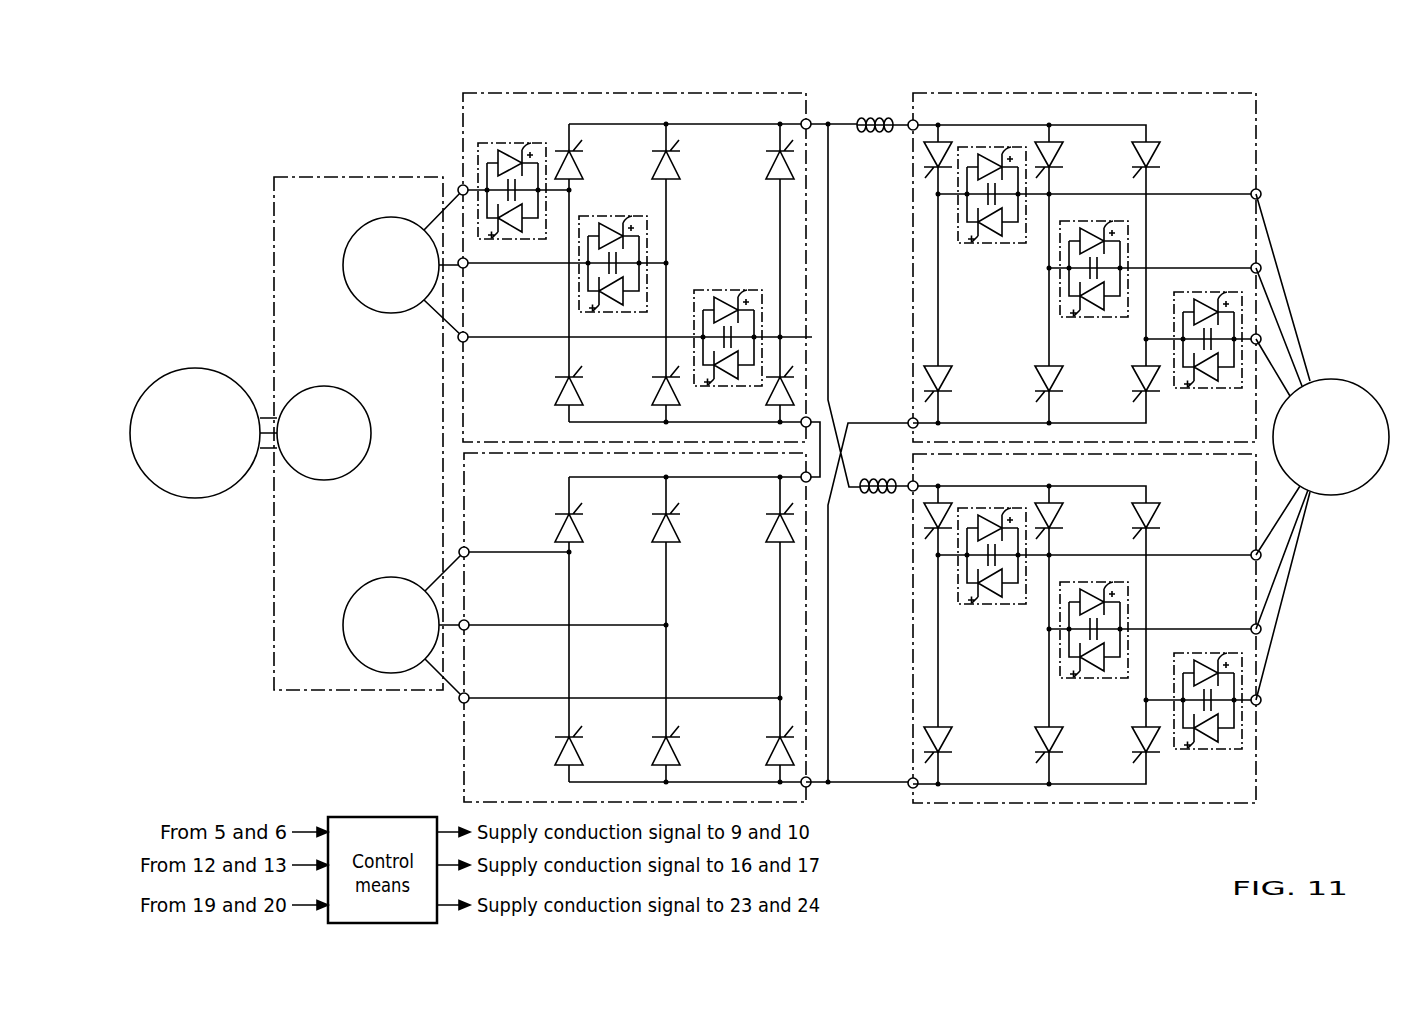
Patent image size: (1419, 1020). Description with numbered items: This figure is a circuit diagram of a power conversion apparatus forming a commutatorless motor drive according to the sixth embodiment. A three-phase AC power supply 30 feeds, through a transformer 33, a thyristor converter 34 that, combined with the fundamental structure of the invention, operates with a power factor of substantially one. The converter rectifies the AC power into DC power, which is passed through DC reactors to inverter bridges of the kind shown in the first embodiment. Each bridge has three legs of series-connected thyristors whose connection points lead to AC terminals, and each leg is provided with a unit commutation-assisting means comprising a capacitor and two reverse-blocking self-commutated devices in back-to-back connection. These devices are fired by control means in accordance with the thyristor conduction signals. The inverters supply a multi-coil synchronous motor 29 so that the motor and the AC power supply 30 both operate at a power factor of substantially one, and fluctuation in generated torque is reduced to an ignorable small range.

The synchronous motor 29 is at (1360, 390).
The three-phase AC power supply 30 is at (189, 499).
The transformer 33 is at (400, 176).
The thyristor converter 34 is at (463, 727).